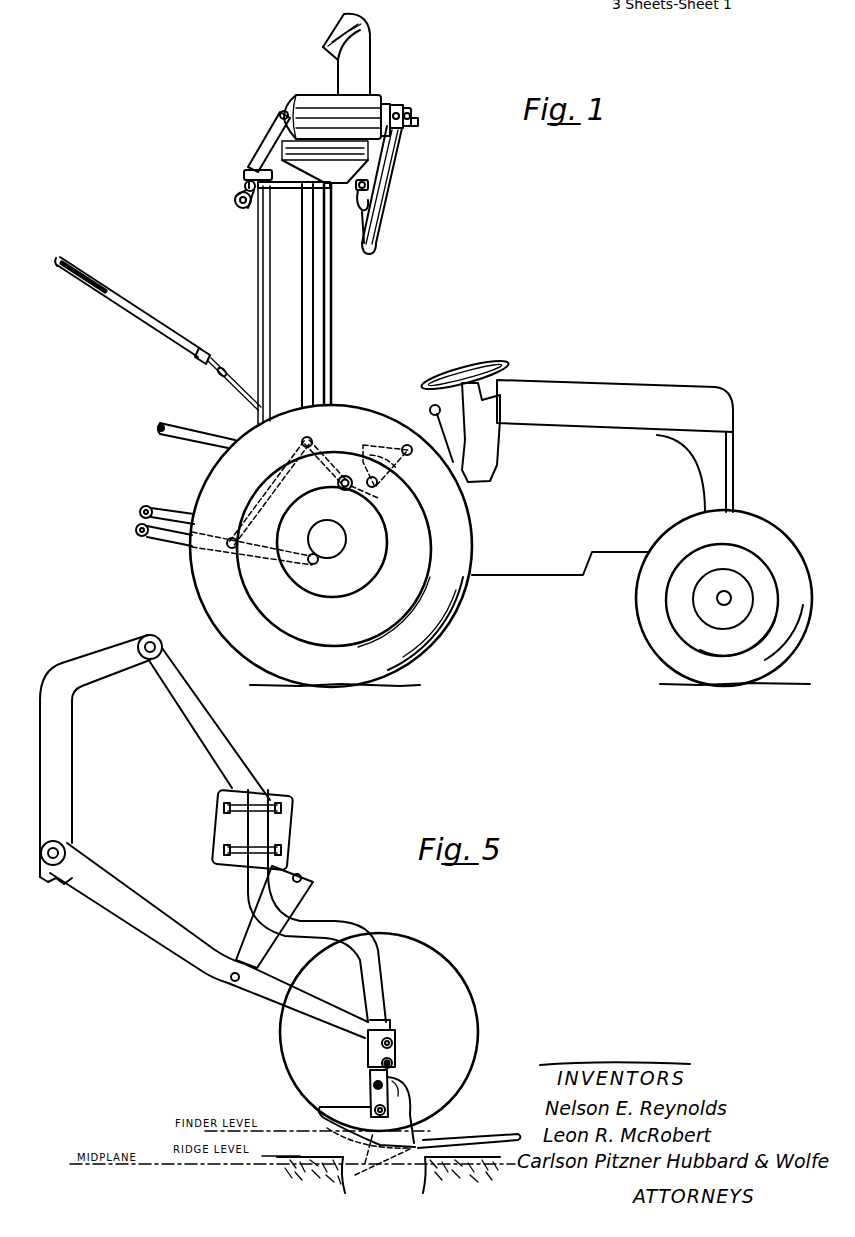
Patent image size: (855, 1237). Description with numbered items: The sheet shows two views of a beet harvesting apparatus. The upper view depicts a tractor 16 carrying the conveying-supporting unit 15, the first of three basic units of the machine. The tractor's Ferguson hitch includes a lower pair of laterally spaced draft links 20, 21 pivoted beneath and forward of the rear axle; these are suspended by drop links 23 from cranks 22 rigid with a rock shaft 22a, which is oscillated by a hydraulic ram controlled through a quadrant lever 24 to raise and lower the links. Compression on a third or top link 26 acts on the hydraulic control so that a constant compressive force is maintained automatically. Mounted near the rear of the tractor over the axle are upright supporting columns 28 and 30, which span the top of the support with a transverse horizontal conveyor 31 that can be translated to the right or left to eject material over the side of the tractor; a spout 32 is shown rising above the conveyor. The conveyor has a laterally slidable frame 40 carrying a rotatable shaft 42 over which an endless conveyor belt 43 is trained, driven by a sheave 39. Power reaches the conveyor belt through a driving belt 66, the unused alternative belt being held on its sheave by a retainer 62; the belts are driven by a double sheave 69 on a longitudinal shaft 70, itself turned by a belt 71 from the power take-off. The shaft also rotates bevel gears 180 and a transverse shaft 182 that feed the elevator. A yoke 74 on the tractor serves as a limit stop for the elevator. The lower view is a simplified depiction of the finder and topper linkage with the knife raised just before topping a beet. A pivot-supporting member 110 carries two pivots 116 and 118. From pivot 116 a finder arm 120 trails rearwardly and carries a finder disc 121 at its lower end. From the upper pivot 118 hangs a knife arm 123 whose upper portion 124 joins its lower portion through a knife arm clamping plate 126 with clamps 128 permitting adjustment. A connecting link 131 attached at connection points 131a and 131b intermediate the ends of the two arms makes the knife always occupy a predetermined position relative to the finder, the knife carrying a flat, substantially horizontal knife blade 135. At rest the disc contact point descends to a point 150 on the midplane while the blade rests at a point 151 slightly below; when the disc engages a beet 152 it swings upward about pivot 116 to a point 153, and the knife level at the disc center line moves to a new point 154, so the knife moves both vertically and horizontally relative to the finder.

In FIG. 1, the conveying-supporting unit 15 is at (457, 213).
In FIG. 1, the tractor 16 is at (627, 373).
In FIG. 1, the draft link 20 is at (172, 534).
In FIG. 1, the draft link 21 is at (172, 508).
In FIG. 1, the crank 22 is at (318, 448).
In FIG. 1, the rock shaft 22a is at (370, 492).
In FIG. 1, the drop link 23 is at (292, 456).
In FIG. 1, the quadrant lever 24 is at (400, 448).
In FIG. 1, the top link 26 is at (182, 427).
In FIG. 1, the upright supporting column 28 is at (304, 290).
In FIG. 1, the upright supporting column 30 is at (333, 305).
In FIG. 1, the transverse horizontal conveyor 31 is at (258, 83).
In FIG. 1, the filling spout 32 is at (372, 52).
In FIG. 1, the sheave 39 is at (398, 104).
In FIG. 1, the laterally slidable frame 40 is at (265, 148).
In FIG. 1, the rotatable shaft 42 is at (415, 122).
In FIG. 1, the endless conveyor belt 43 is at (325, 100).
In FIG. 1, the retainer 62 is at (410, 112).
In FIG. 1, the driving belt 66 is at (400, 155).
In FIG. 1, the double sheave 69 is at (372, 190).
In FIG. 1, the longitudinal shaft 70 is at (280, 188).
In FIG. 1, the belt 71 is at (262, 272).
In FIG. 1, the yoke 74 is at (203, 352).
In FIG. 5, the pivot-supporting member 110 is at (64, 790).
In FIG. 5, the pivot 116 is at (66, 850).
In FIG. 5, the pivot 118 is at (143, 640).
In FIG. 5, the finder arm 120 is at (185, 948).
In FIG. 5, the finder disc 121 is at (466, 988).
In FIG. 5, the knife arm 123 is at (313, 833).
In FIG. 5, the upper portion of knife arm 124 is at (246, 755).
In FIG. 5, the knife arm clamping plate 126 is at (292, 814).
In FIG. 5, the clamps 128 is at (275, 795).
In FIG. 5, the connecting link 131 is at (305, 902).
In FIG. 5, the connection point 131a is at (232, 982).
In FIG. 5, the connection point 131b is at (302, 878).
In FIG. 5, the knife blade 135 is at (502, 1135).
In FIG. 5, the point 150 is at (353, 1157).
In FIG. 5, the point 151 is at (360, 1174).
In FIG. 5, the beet 152 is at (423, 1180).
In FIG. 5, the point 153 is at (361, 1068).
In FIG. 5, the point 154 is at (418, 1143).
In FIG. 1, the bevel gears 180 is at (230, 182).
In FIG. 1, the transverse shaft 182 is at (252, 172).